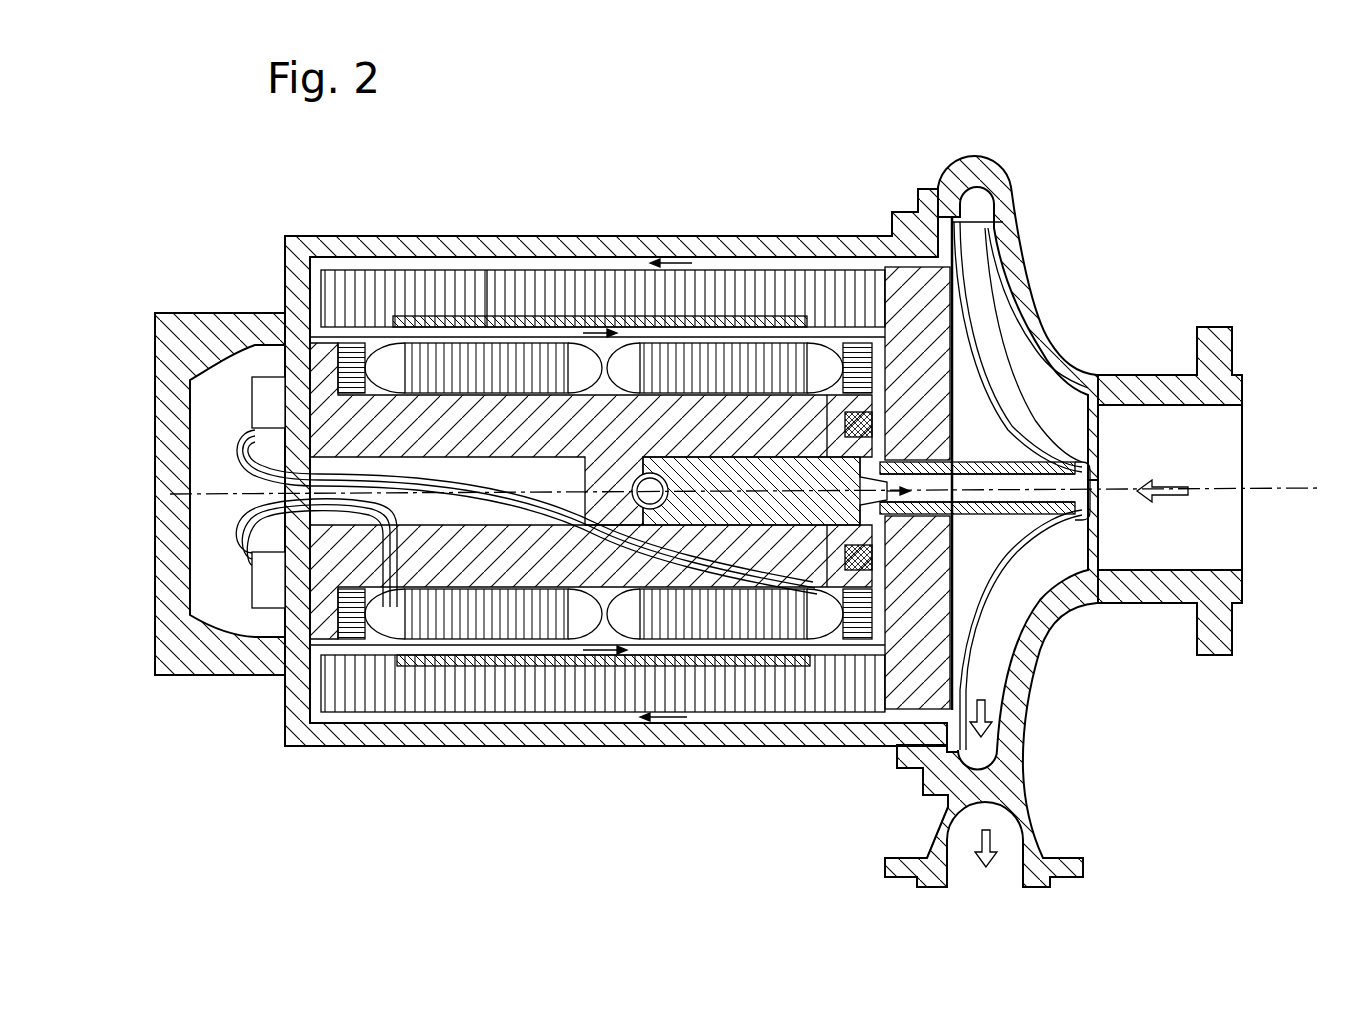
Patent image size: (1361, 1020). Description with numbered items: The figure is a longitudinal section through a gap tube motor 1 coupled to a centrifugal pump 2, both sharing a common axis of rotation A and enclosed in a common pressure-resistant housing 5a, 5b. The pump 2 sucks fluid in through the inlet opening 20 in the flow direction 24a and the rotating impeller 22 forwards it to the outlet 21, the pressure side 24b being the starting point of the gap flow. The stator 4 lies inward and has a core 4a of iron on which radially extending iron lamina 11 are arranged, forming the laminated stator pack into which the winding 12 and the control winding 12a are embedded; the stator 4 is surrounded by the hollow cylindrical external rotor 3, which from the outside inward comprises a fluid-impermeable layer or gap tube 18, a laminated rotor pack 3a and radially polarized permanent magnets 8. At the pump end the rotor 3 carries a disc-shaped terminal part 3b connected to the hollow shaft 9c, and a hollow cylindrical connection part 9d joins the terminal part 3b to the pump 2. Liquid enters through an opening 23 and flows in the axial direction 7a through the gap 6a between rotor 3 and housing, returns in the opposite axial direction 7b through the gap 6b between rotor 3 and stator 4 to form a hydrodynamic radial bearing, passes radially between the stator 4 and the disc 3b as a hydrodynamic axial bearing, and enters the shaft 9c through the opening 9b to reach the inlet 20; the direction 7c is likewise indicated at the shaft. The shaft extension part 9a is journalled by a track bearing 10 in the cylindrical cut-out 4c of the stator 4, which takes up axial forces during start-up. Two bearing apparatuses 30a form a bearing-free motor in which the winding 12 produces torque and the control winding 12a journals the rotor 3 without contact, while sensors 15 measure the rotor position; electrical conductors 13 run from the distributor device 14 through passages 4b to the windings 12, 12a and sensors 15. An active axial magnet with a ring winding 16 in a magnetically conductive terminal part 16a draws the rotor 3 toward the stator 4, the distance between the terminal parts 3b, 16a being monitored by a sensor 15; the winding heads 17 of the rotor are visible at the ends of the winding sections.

The gap tube motor 1 is at (113, 133).
The centrifugal pump 2 is at (1310, 122).
The rotor 3 is at (795, 690).
The laminated rotor pack 3a is at (608, 703).
The disc-shaped terminal part 3b is at (925, 392).
The stator 4 is at (420, 575).
The core 4a is at (497, 640).
The passages 4b is at (644, 596).
The cylindrical cut-out 4c is at (792, 466).
The pressure resistant housing 5a is at (165, 367).
The pressure resistant housing 5b is at (1025, 290).
The gap 6a is at (524, 266).
The gap 6b is at (453, 322).
The axial direction 7a is at (677, 262).
The opposite axial direction 7b is at (600, 330).
The shaft 7c is at (925, 514).
The permanent magnets 8 is at (450, 667).
The extension part 9a is at (730, 465).
The opening 9b is at (975, 538).
The shaft 9c is at (1020, 455).
The hollow cylindrical connection part 9d is at (940, 712).
The track bearing 10 is at (652, 470).
The iron lamina 11 is at (422, 370).
The winding 12 is at (385, 615).
The control winding 12a is at (392, 628).
The electrical conductors 13 is at (240, 457).
The distributor device 14 is at (257, 410).
The sensors 15 is at (350, 360).
The ring winding 16 is at (870, 425).
The terminal part 16a is at (870, 445).
The winding head 17 is at (418, 640).
The gap tube 18 is at (494, 338).
The inlet opening 20 is at (1223, 435).
The outlet 21 is at (1010, 842).
The impeller 22 is at (985, 662).
The opening 23 is at (920, 188).
The flow direction 24a is at (1163, 487).
The pressure side 24b is at (980, 848).
The bearing apparatuses 30a is at (612, 837).
The axis of rotation A is at (1303, 487).